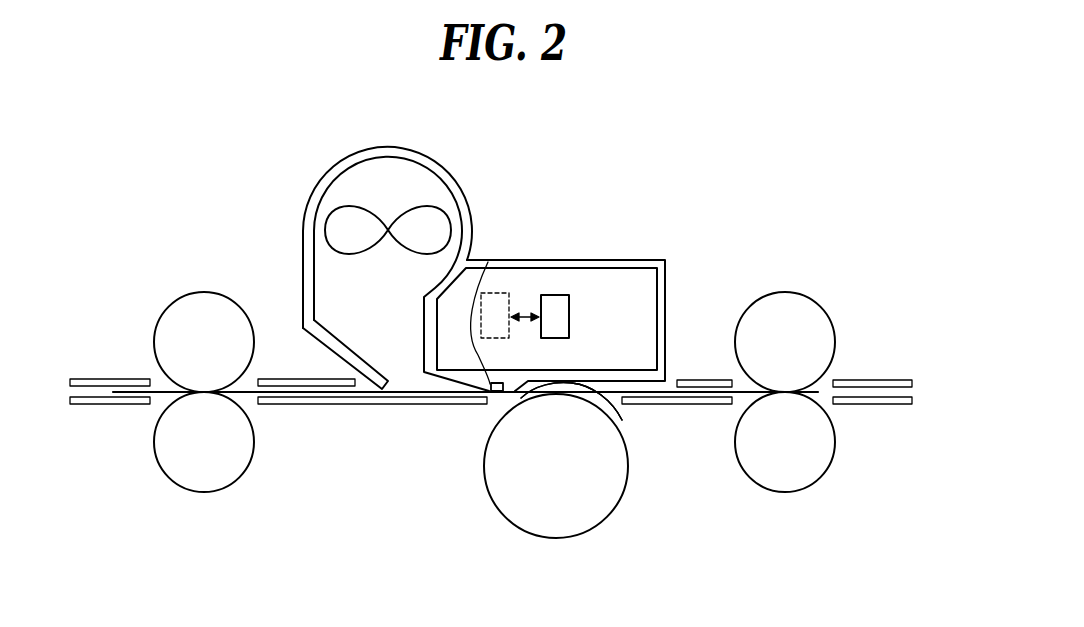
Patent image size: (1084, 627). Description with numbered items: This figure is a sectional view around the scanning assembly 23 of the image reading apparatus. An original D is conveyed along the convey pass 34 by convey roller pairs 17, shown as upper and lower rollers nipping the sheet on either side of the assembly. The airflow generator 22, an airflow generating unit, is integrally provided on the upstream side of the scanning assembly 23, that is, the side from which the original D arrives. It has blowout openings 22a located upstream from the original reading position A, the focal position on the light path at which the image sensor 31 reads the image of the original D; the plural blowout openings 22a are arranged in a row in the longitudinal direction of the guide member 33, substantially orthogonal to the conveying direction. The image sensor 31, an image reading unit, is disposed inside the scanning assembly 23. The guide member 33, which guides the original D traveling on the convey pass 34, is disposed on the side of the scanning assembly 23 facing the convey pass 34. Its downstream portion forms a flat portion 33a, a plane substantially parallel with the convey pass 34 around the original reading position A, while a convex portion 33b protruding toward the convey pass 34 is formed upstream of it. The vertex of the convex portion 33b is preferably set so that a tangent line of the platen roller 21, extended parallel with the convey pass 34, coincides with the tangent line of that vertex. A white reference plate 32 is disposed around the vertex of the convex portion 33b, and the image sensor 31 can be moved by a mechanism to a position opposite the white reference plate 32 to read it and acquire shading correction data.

The convey roller pair 17 is at (203, 292).
The platen roller 21 is at (503, 516).
The airflow generator 22 is at (383, 180).
The blowout openings 22a is at (410, 392).
The scanning assembly 23 is at (637, 260).
The image sensor 31 is at (562, 293).
The white reference plate 32 is at (488, 262).
The guide member 33 is at (650, 388).
The flat portion 33a is at (537, 395).
The convex portion 33b is at (510, 385).
The convey pass 34 is at (672, 380).
The original reading position A is at (622, 420).
The original D is at (352, 395).